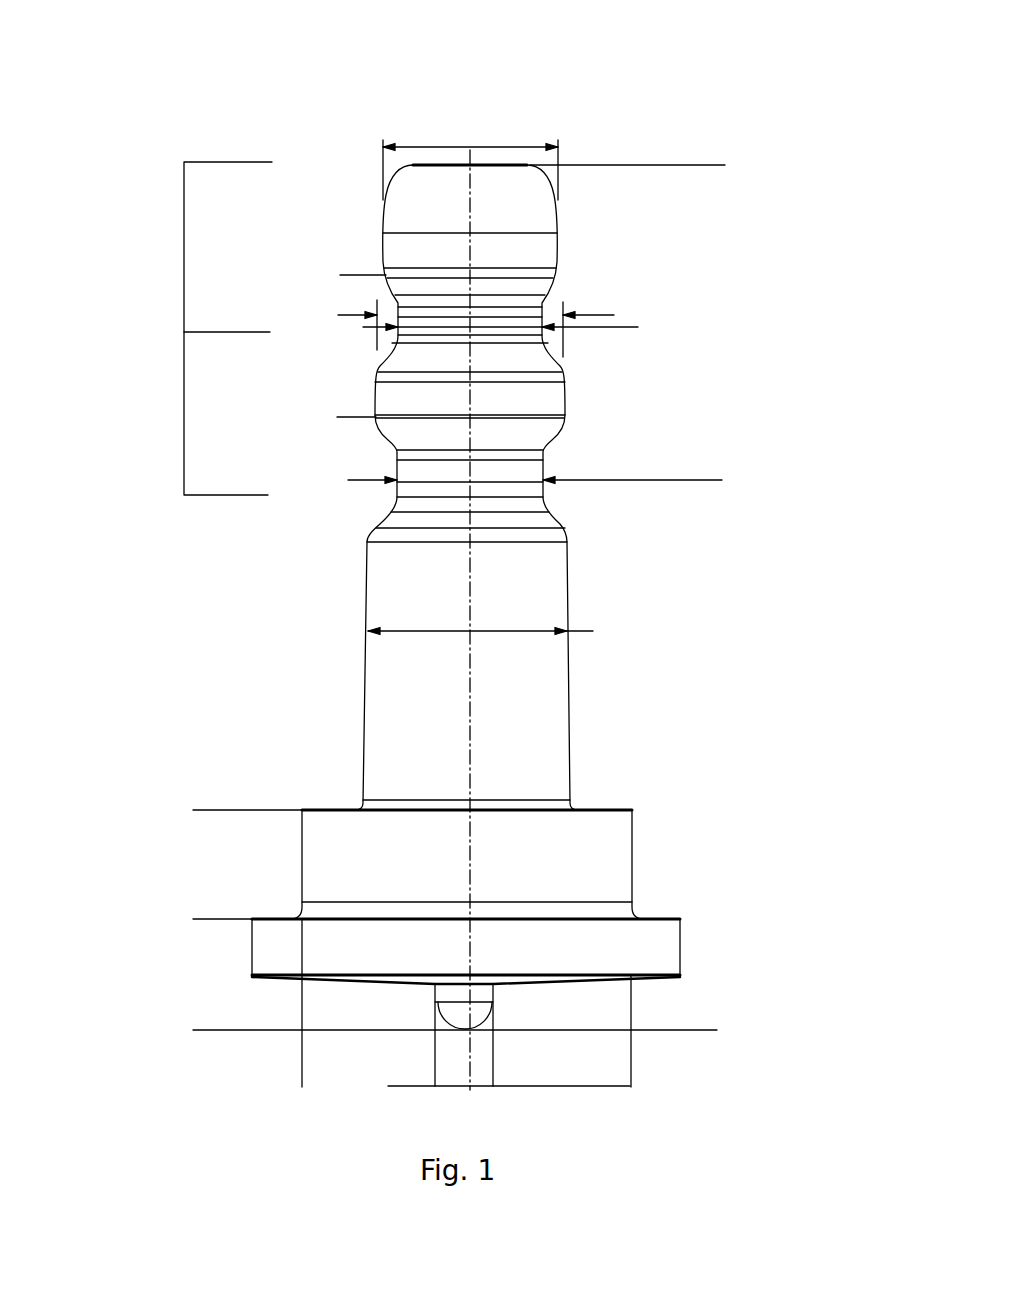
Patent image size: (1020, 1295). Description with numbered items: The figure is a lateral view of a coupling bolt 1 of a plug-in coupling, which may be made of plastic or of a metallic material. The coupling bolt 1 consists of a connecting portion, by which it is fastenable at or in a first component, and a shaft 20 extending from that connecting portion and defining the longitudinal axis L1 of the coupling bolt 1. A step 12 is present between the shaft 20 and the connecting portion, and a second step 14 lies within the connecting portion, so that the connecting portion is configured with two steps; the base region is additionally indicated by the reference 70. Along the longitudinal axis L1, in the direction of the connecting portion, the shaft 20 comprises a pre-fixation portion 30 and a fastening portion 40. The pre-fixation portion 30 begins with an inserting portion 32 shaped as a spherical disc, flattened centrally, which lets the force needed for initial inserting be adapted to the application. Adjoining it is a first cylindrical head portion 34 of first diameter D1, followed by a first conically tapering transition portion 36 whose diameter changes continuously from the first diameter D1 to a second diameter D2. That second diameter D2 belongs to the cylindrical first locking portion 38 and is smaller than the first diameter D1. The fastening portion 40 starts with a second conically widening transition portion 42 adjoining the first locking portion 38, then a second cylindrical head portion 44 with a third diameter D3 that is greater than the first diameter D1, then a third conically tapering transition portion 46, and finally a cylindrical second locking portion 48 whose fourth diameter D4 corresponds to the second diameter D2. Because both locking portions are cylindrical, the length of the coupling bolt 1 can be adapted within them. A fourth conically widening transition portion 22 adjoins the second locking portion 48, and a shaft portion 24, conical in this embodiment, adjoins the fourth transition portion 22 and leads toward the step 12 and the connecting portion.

The coupling bolt 1 is at (732, 38).
The shaft 20 is at (325, 662).
The fourth conically widening transition portion 22 is at (553, 518).
The conical shaft portion 24 is at (568, 593).
The pre-fixation portion 30 is at (184, 238).
The inserting portion 32 is at (398, 178).
The first cylindrical head portion 34 is at (558, 246).
The first conically tapering transition portion 36 is at (552, 288).
The first locking portion 38 is at (400, 316).
The fastening portion 40 is at (184, 407).
The second conically widening transition portion 42 is at (558, 357).
The second cylindrical head portion 44 is at (563, 396).
The third conically tapering transition portion 46 is at (556, 431).
The second locking portion 48 is at (541, 468).
The step 12 is at (330, 805).
The second step 14 is at (290, 917).
The base / fixture 70 is at (692, 1087).
The first diameter D1 is at (470, 161).
The second diameter D2 is at (517, 337).
The third diameter D3 is at (489, 328).
The fourth diameter D4 is at (551, 489).
The longitudinal axis L1 is at (470, 190).